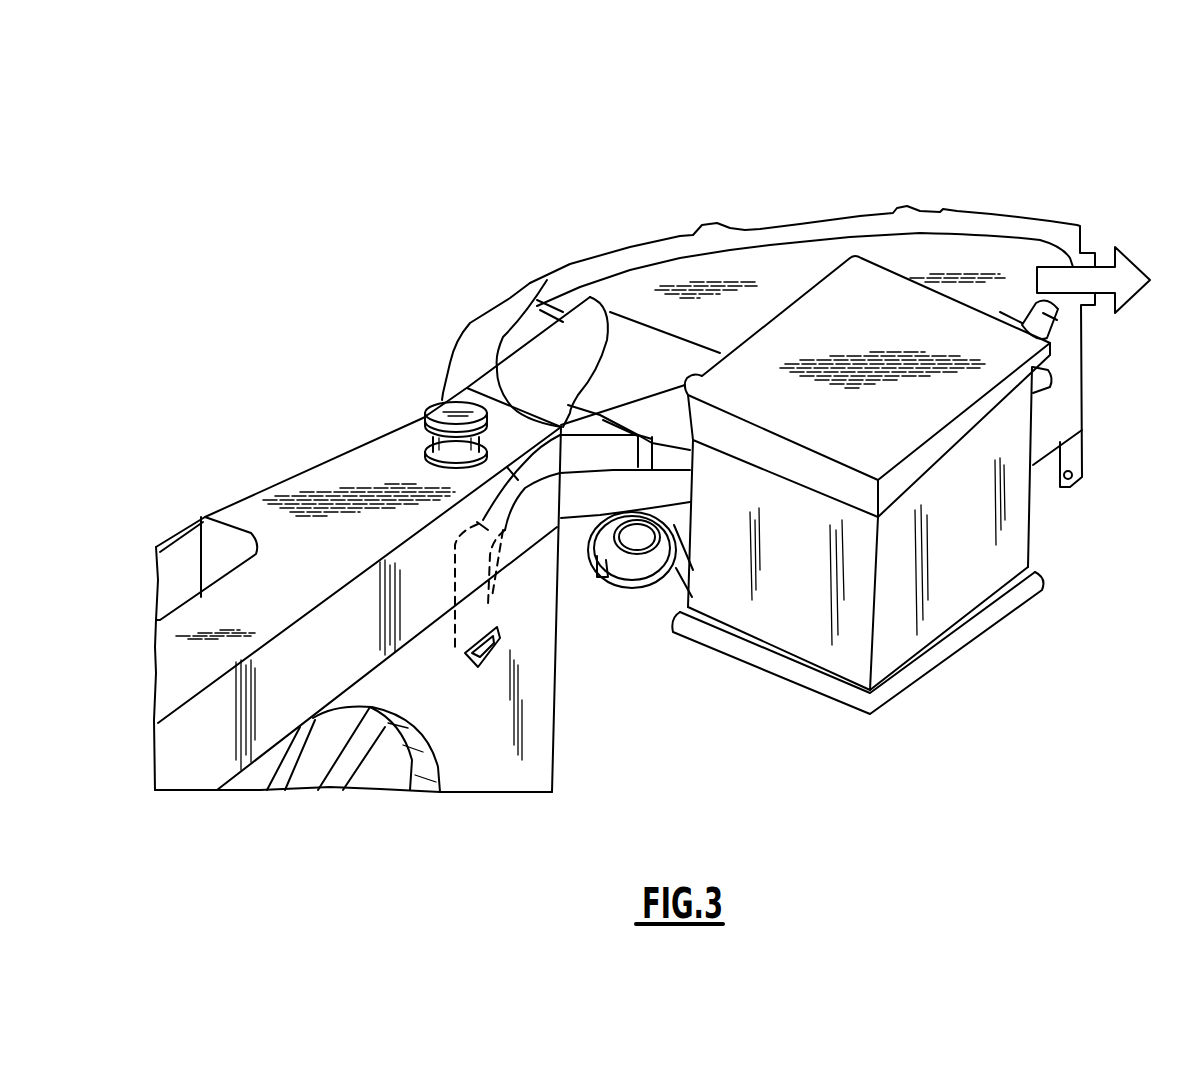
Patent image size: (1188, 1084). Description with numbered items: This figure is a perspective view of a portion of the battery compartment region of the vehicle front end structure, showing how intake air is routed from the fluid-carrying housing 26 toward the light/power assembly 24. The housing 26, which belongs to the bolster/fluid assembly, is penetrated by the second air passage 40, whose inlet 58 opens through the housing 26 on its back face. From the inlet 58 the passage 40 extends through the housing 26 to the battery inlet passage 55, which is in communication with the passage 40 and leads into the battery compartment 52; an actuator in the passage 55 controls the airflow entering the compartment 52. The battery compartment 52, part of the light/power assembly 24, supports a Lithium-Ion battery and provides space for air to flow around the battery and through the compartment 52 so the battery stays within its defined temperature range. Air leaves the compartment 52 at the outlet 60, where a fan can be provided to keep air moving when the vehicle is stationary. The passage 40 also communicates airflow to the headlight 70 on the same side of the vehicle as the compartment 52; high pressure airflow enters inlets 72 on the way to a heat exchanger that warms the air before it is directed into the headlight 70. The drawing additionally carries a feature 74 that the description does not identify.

The light/power assembly 24 is at (994, 153).
The housing 26 is at (242, 516).
The second air passage 40 is at (485, 611).
The battery compartment 52 is at (948, 647).
The battery inlet passage 55 is at (660, 458).
The inlet 58 is at (477, 664).
The outlet 60 is at (1047, 318).
The headlight 70 is at (768, 230).
The inlets 72 is at (552, 350).
The air flow direction 74 is at (1097, 254).